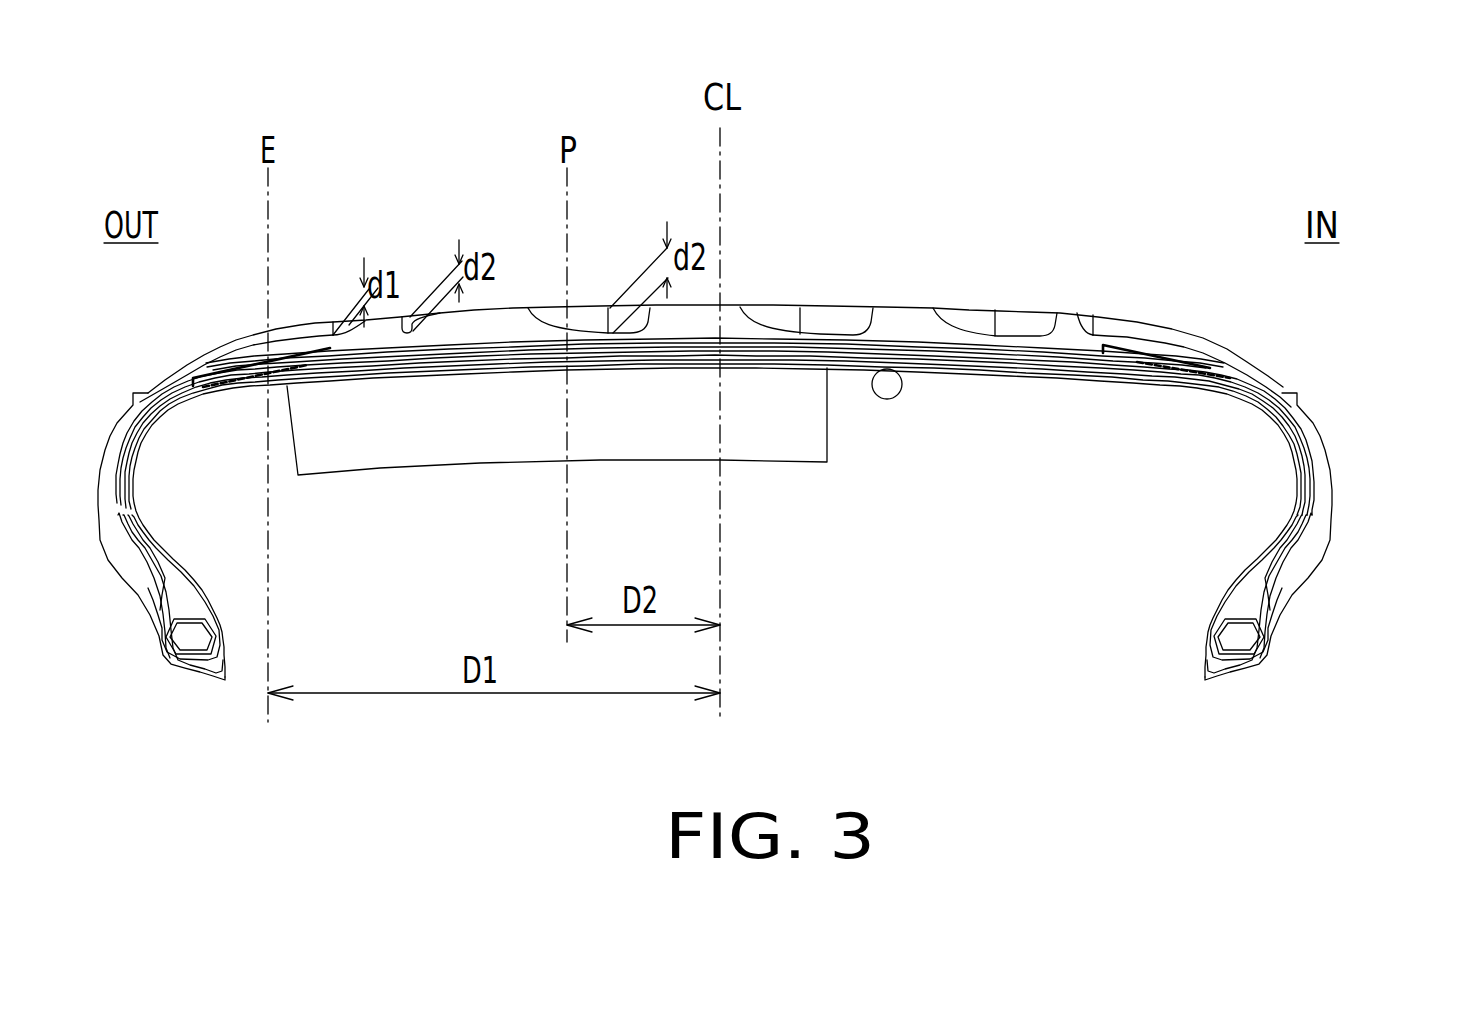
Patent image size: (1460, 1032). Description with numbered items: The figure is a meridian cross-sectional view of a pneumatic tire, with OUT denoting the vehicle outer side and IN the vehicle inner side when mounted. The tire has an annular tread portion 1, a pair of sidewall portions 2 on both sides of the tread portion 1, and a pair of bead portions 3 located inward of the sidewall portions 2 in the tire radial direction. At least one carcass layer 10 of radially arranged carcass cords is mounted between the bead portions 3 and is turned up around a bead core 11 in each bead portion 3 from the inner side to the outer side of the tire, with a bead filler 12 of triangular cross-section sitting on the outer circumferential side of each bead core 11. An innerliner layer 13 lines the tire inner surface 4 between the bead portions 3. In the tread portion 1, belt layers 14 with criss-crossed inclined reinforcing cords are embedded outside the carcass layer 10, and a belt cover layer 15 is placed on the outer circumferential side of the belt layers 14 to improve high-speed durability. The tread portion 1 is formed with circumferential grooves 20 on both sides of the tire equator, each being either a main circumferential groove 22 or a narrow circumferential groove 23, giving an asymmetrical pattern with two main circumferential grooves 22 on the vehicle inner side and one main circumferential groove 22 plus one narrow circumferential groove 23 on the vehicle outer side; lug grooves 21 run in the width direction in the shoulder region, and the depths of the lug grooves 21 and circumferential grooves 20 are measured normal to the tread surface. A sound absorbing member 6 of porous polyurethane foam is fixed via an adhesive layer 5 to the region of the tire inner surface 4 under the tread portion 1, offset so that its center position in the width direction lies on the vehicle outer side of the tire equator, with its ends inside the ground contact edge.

The tread portion 1 is at (756, 296).
The sidewall portions 2 is at (1340, 470).
The bead portions 3 is at (793, 607).
The tire inner surface 4 is at (893, 366).
The adhesive layer 5 is at (427, 387).
The sound absorbing member 6 is at (495, 430).
The carcass layer 10 is at (1297, 423).
The bead core 11 is at (1242, 628).
The bead filler 12 is at (1255, 592).
The innerliner layer 13 is at (1290, 517).
The belt layers 14 is at (1093, 345).
The belt cover layer 15 is at (1223, 362).
The circumferential grooves 20 is at (716, 259).
The lug grooves 21 is at (306, 322).
The main circumferential groove 22 is at (583, 326).
The narrow circumferential groove 23 is at (405, 314).